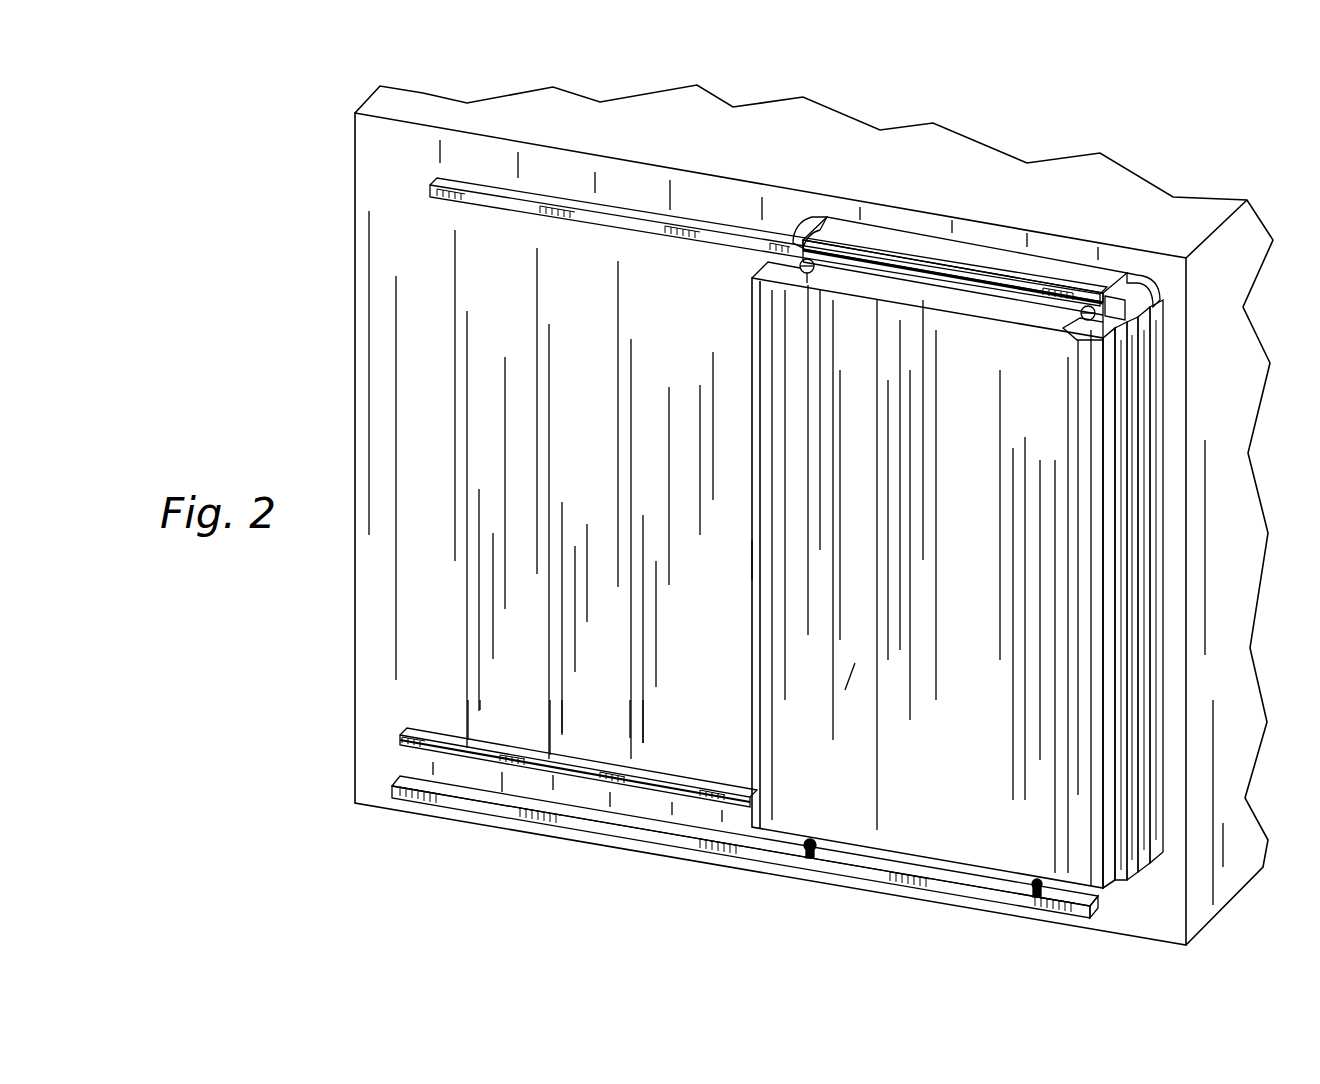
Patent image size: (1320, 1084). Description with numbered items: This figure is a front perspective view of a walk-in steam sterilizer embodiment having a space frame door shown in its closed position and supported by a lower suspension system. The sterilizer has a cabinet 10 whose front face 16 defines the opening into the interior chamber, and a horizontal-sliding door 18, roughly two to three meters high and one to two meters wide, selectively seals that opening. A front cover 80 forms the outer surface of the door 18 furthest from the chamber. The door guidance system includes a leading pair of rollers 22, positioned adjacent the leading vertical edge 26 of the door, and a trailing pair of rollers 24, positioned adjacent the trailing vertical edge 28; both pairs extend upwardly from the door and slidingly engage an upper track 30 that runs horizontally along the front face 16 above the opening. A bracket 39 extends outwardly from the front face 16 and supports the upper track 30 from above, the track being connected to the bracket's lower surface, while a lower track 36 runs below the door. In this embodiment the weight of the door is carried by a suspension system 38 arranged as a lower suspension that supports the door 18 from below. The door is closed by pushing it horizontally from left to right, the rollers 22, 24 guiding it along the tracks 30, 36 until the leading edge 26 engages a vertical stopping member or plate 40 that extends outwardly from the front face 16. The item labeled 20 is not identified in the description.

The cabinet 10 is at (1049, 138).
The front face 16 is at (592, 459).
The horizontal-sliding door 18 is at (949, 697).
The upper track bracket 20 is at (790, 208).
The leading pair of rollers 22 is at (1063, 328).
The trailing pair of rollers 24 is at (800, 276).
The leading vertical edge 26 is at (1114, 540).
The trailing vertical edge 28 is at (744, 561).
The upper track 30 is at (543, 190).
The lower track 36 is at (476, 766).
The suspension system 38 is at (1020, 910).
The bracket 39 is at (1028, 268).
The vertical stopping member or plate 40 is at (1142, 580).
The front cover 80 is at (855, 663).